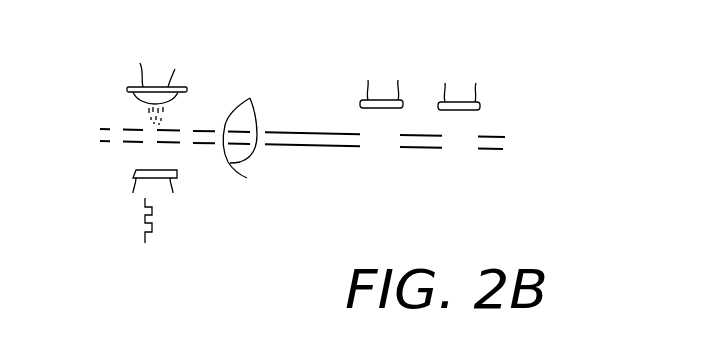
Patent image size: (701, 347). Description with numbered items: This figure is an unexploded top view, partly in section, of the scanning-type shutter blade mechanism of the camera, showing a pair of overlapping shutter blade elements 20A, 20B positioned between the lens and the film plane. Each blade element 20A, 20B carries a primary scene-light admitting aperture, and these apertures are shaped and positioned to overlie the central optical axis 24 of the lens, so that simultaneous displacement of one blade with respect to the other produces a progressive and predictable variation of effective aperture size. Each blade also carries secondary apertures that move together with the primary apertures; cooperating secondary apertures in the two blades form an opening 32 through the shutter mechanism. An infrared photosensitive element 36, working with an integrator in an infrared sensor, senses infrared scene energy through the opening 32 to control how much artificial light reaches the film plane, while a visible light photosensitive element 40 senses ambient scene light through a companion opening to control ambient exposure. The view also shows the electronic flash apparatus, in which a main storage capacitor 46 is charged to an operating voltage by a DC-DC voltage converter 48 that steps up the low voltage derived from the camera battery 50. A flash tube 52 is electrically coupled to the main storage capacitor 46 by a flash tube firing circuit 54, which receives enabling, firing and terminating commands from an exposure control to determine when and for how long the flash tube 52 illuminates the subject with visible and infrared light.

The shutter blade element 20A is at (498, 149).
The shutter blade element 20B is at (490, 137).
The central optical axis 24 is at (460, 150).
The opening 32 is at (383, 146).
The infrared photosensitive element 36 is at (357, 100).
The visible light photosensitive element 40 is at (481, 103).
The main storage capacitor 46 is at (190, 88).
The DC-DC voltage converter 48 is at (133, 173).
The battery 50 is at (233, 163).
The flash tube 52 is at (250, 98).
The flash tube firing circuit 54 is at (178, 231).